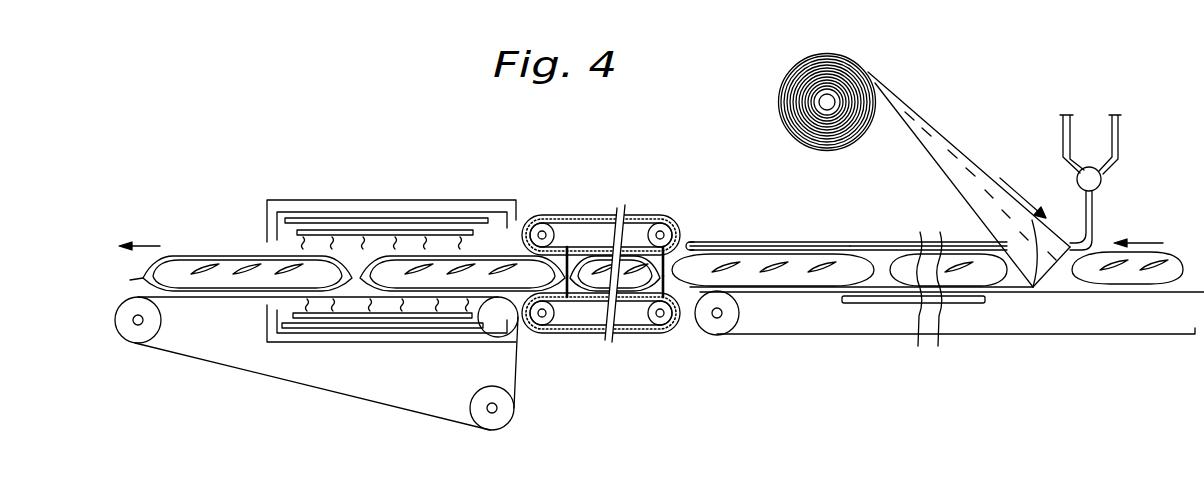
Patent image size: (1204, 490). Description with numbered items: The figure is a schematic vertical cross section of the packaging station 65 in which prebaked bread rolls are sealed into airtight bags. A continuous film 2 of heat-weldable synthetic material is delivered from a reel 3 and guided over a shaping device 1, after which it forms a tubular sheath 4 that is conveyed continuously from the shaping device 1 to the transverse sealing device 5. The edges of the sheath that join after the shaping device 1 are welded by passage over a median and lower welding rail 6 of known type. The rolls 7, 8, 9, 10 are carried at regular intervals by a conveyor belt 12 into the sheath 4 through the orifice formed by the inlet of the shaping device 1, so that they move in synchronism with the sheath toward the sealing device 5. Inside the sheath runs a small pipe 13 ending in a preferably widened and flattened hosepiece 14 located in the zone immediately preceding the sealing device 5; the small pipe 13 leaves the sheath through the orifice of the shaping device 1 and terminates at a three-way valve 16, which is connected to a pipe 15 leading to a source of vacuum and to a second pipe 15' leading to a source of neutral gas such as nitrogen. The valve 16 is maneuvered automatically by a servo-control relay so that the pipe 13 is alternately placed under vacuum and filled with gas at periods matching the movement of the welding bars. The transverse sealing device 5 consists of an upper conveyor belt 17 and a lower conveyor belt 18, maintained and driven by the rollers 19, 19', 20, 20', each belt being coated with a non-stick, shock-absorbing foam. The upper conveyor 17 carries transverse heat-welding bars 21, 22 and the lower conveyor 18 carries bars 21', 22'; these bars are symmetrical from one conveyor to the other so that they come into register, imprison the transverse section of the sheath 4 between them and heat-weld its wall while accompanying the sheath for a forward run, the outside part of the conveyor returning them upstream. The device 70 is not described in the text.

The shaping device 1 is at (1052, 240).
The continuous film 2 is at (965, 163).
The reel 3 is at (779, 108).
The tubular sheath 4 is at (820, 246).
The transverse sealing device 5 is at (678, 210).
The welding rail 6 is at (980, 304).
The roll 7 is at (1177, 252).
The roll 8 is at (960, 262).
The roll 9 is at (788, 266).
The roll 10 is at (638, 278).
The conveyor belt 12 is at (885, 334).
The small pipe 13 is at (882, 246).
The hosepiece 14 is at (702, 248).
The pipe 15 is at (1050, 142).
The second pipe 15' is at (1132, 142).
The three-way valve 16 is at (1101, 180).
The upper conveyor belt 17 is at (598, 212).
The lower conveyor belt 18 is at (604, 296).
The roller 19 is at (545, 204).
The roller 19' is at (543, 338).
The roller 20 is at (658, 204).
The roller 20' is at (670, 339).
The transverse heat-welding bar 21 is at (580, 218).
The transverse heat-welding bar 21' is at (567, 341).
The transverse heat-welding bar 22 is at (693, 232).
The transverse heat-welding bar 22' is at (700, 326).
The packaging station 65 is at (938, 107).
The heat shrink tunnel 70 is at (412, 190).